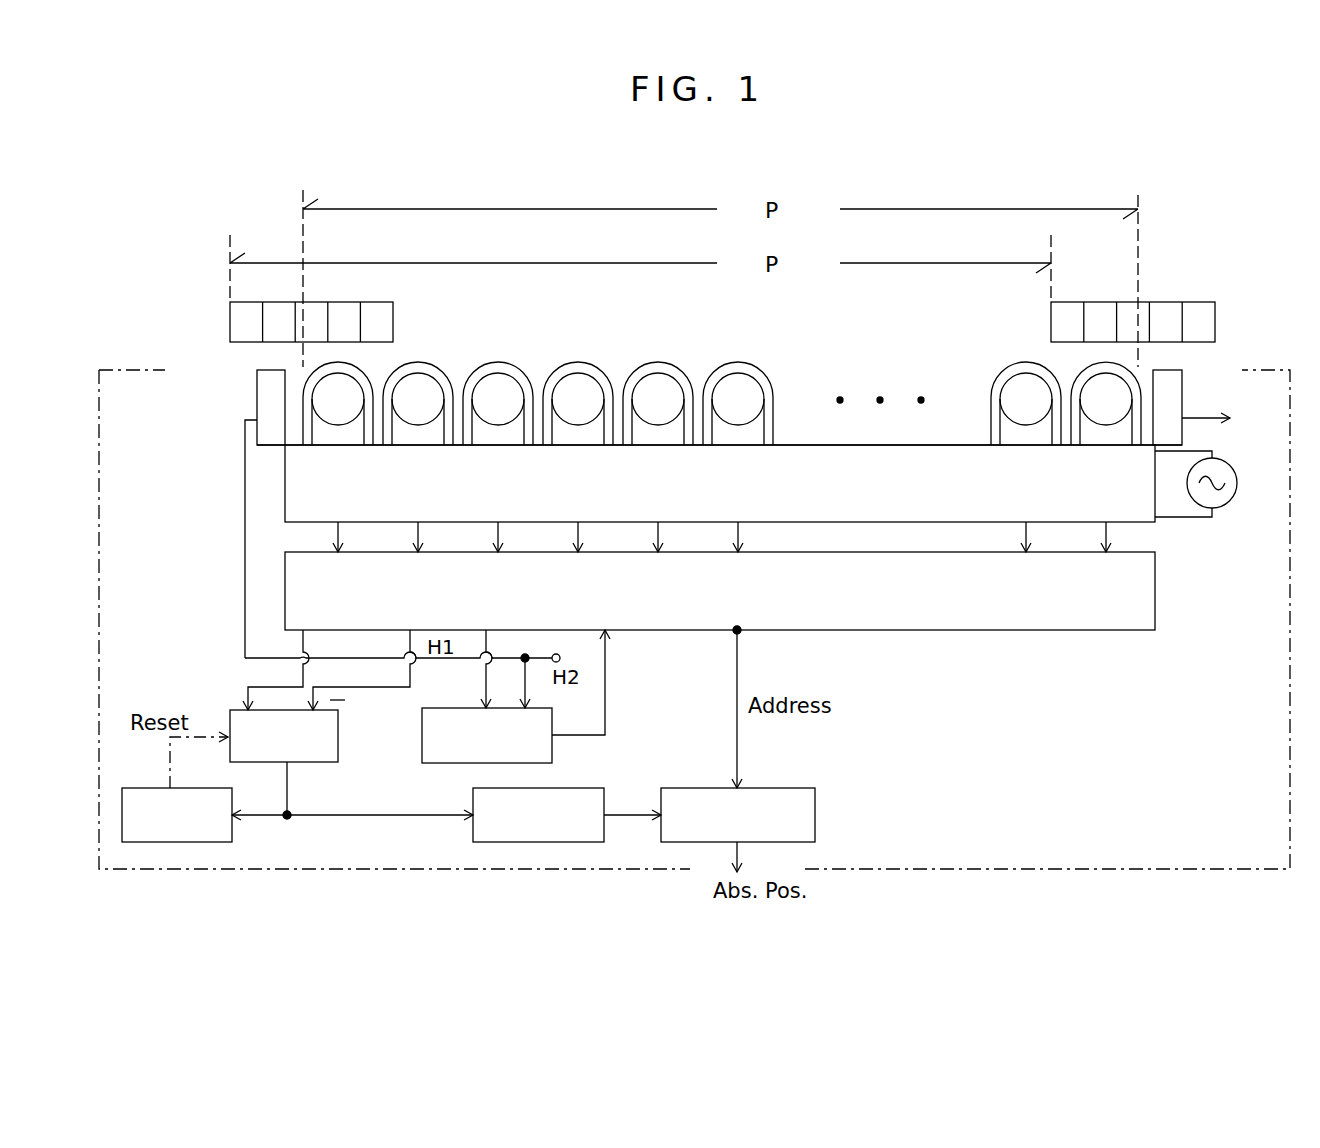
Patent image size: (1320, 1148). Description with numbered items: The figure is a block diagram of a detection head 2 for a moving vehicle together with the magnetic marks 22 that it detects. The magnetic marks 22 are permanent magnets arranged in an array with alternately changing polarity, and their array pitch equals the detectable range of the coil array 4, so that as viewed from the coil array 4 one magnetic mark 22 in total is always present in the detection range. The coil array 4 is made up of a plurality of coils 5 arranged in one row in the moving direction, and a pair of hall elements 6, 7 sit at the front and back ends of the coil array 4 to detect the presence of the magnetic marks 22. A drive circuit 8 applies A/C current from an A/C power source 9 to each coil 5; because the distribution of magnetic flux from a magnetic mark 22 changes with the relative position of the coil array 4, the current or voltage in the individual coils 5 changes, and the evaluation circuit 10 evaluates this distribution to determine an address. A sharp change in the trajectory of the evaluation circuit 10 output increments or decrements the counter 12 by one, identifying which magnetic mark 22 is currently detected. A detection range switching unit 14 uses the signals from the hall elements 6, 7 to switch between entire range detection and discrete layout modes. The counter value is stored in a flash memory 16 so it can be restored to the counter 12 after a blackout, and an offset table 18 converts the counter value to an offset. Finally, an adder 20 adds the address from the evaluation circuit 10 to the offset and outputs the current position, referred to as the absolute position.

The detection head 2 is at (860, 922).
The coil array 4 is at (765, 369).
The coil 5 is at (357, 369).
The hall element 6 is at (257, 380).
The hall element 7 is at (1182, 378).
The drive circuit 8 is at (1143, 511).
The A/C power source 9 is at (1237, 472).
The evaluation circuit 10 is at (1155, 592).
The counter 12 is at (308, 762).
The detection range switching unit 14 is at (552, 748).
The flash memory 16 is at (232, 830).
The offset table 18 is at (473, 830).
The adder 20 is at (815, 812).
The magnetic mark 22 is at (393, 318).